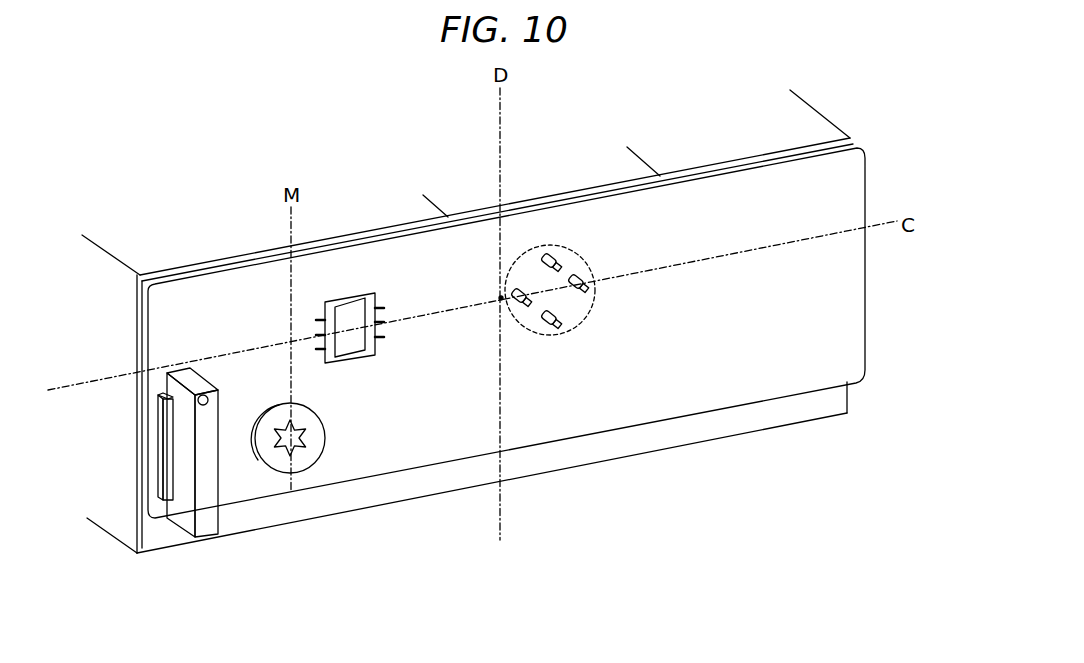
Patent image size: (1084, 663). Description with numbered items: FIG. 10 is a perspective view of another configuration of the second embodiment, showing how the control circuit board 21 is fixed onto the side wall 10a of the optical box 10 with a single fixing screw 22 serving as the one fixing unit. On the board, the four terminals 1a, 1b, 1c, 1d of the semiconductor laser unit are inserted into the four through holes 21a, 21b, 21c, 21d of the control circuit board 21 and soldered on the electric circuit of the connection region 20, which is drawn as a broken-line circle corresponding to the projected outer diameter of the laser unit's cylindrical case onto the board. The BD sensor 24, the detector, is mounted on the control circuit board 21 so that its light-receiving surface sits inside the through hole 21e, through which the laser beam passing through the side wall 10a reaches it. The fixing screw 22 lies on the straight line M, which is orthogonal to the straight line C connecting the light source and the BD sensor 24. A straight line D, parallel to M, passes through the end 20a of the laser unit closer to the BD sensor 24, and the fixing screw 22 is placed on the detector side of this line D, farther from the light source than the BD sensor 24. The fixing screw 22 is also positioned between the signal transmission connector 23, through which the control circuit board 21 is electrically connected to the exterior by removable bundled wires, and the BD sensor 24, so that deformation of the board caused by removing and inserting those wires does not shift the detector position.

The optical box 10 is at (97, 250).
The side wall 10a is at (720, 155).
The terminal 1a is at (560, 262).
The terminal 1b is at (520, 308).
The terminal 1c is at (563, 330).
The terminal 1d is at (595, 292).
The connection region 20 is at (587, 312).
The end of the semiconductor laser unit 20a is at (499, 301).
The control circuit board 21 is at (727, 372).
The through hole 21a is at (543, 258).
The through hole 21b is at (508, 283).
The through hole 21c is at (537, 323).
The through hole 21d is at (583, 276).
The through hole 21e is at (357, 318).
The fixing screw 22 is at (307, 457).
The signal transmission connector 23 is at (208, 480).
The BD sensor 24 is at (347, 316).